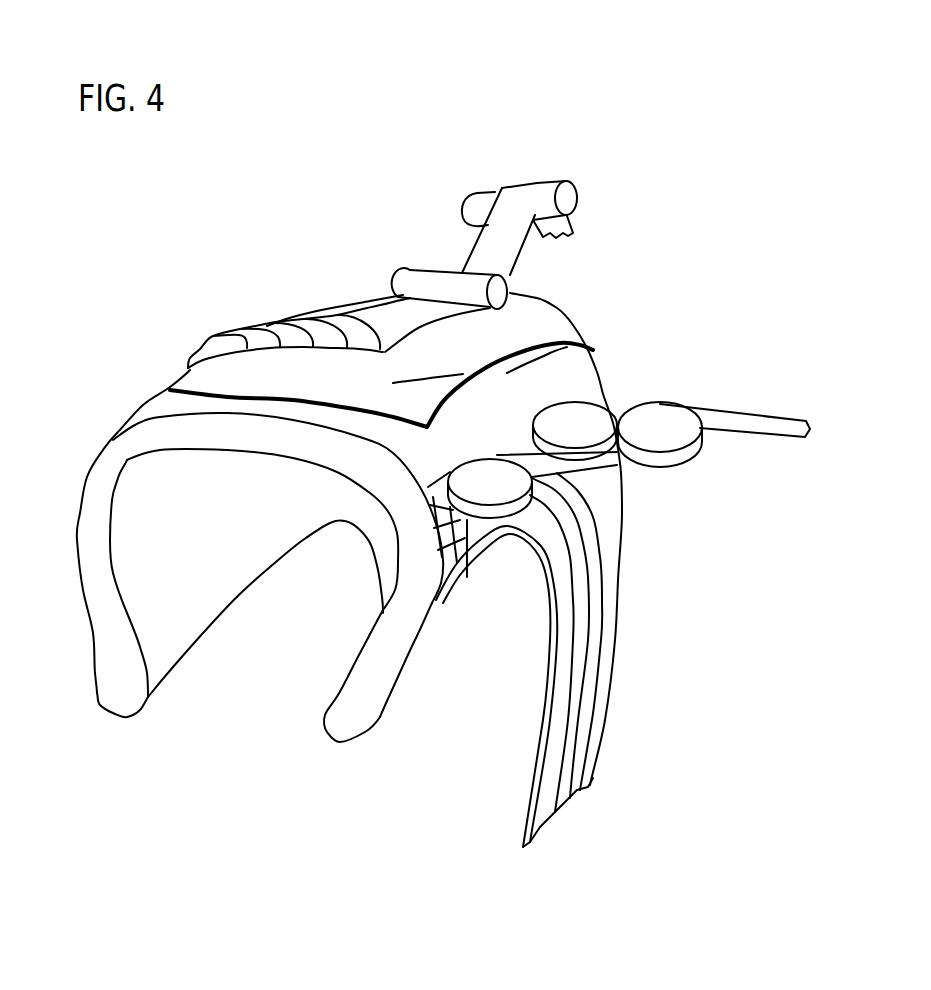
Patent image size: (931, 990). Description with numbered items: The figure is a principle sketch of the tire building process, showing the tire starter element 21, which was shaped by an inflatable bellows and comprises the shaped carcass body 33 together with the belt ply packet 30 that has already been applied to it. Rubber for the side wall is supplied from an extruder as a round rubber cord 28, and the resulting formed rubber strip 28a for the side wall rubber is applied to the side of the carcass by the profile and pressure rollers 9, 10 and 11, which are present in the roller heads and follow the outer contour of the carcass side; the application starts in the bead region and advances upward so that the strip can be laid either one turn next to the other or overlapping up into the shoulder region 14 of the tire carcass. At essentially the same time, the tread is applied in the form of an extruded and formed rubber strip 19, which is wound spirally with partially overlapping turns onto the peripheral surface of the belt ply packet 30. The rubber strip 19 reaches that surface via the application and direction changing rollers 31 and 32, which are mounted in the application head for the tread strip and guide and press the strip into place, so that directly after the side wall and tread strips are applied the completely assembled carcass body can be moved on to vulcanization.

The profile and pressure roller 9 is at (578, 433).
The profile and pressure roller 10 is at (665, 435).
The profile and pressure roller 11 is at (490, 490).
The shoulder region 14 is at (565, 340).
The rubber strip 19 is at (487, 248).
The tire starter element 21 is at (100, 423).
The round rubber cord 28 is at (747, 422).
The formed rubber strip 28a is at (463, 527).
The belt ply packet 30 is at (527, 297).
The application and direction changing roller 31 is at (398, 287).
The application and direction changing roller 32 is at (551, 195).
The carcass body 33 is at (123, 463).